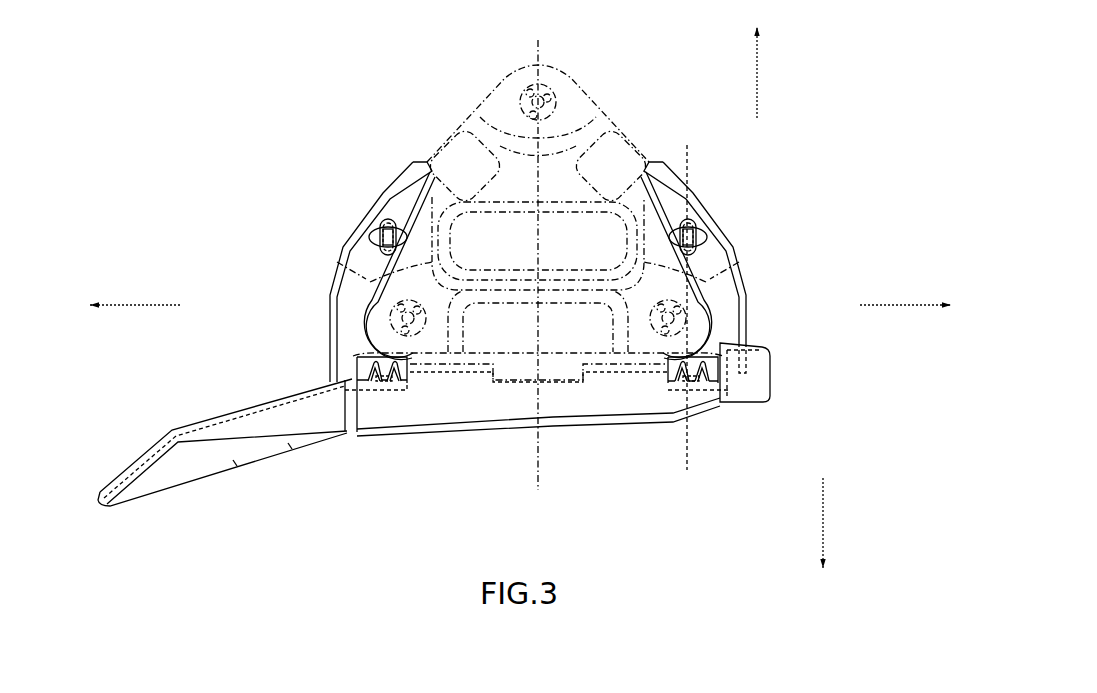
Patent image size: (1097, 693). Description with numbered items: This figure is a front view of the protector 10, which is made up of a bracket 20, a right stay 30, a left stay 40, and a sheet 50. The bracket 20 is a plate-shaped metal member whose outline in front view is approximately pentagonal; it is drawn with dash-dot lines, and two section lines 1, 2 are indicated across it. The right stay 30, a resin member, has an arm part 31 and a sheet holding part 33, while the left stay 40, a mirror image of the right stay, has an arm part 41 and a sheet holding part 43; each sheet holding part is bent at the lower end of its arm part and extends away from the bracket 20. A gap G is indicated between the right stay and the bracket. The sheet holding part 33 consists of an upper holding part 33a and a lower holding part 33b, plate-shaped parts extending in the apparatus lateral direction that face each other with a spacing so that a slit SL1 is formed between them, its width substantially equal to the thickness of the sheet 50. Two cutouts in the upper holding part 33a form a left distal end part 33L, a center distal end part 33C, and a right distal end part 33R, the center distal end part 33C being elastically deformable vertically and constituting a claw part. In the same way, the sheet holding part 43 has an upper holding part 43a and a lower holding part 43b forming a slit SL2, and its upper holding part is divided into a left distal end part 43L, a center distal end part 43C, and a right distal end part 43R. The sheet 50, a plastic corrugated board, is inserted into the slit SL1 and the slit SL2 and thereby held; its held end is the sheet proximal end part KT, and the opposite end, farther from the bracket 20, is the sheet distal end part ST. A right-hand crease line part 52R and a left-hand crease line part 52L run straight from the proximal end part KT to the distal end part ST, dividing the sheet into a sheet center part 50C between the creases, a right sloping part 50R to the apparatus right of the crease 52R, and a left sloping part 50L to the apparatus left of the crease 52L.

The section line 1 is at (540, 43).
The section line 2 is at (689, 146).
The protector 10 is at (501, 297).
The bracket 20 is at (538, 223).
The right stay 30 is at (710, 267).
The arm part 31 is at (714, 219).
The sheet holding part 33 is at (749, 403).
The upper holding part 33a is at (756, 377).
The lower holding part 33b is at (756, 390).
The center distal end part 33C is at (697, 383).
The left distal end part 33L is at (687, 381).
The right distal end part 33R is at (733, 378).
The left stay 40 is at (371, 272).
The arm part 41 is at (353, 260).
The sheet holding part 43 is at (333, 404).
The upper holding part 43a is at (345, 378).
The lower holding part 43b is at (330, 387).
The center distal end part 43C is at (384, 395).
The left distal end part 43L is at (343, 393).
The right distal end part 43R is at (405, 387).
The sheet 50 is at (467, 425).
The sheet center part 50C is at (577, 407).
The left sloping part 50L is at (237, 437).
The right sloping part 50R is at (757, 363).
The left-hand crease line part 52L is at (362, 410).
The right-hand crease line part 52R is at (732, 388).
The gap G is at (649, 273).
The sheet proximal end part KT is at (425, 362).
The slit SL1 is at (666, 383).
The slit SL2 is at (411, 383).
The sheet distal end part ST is at (493, 426).